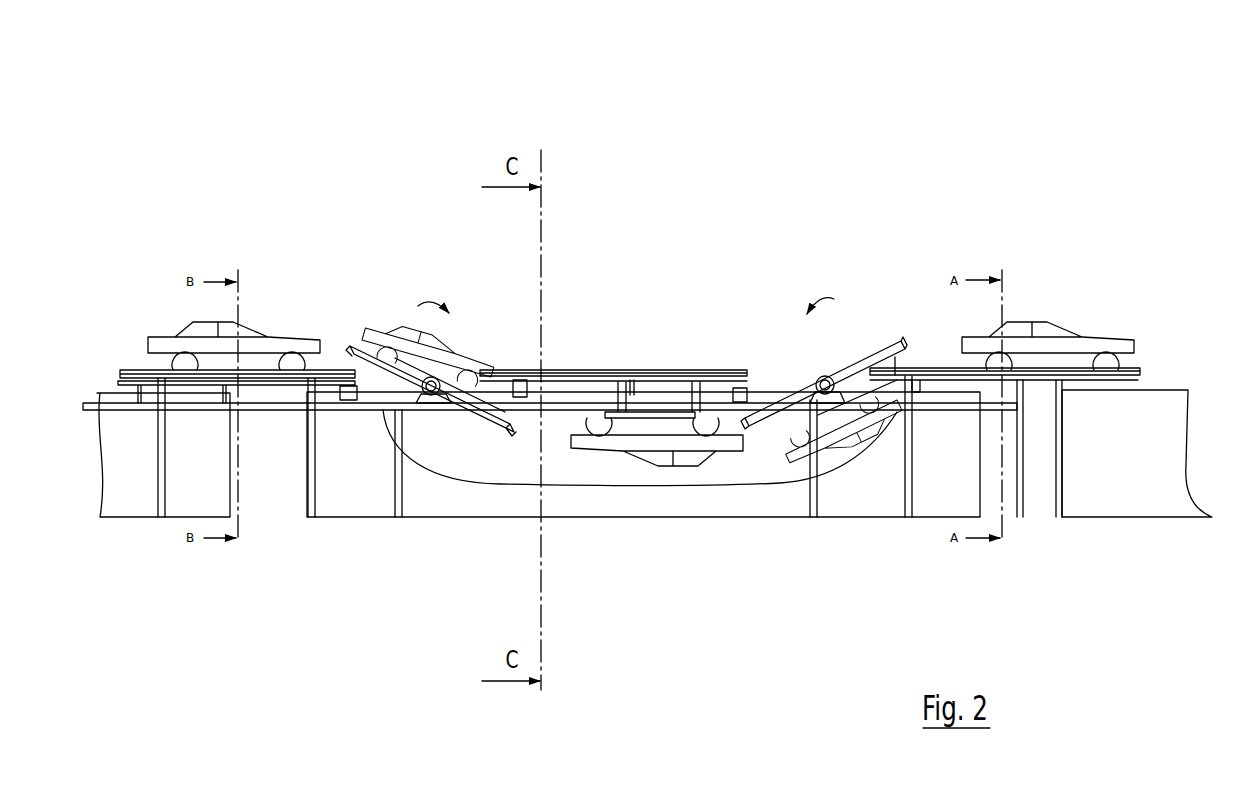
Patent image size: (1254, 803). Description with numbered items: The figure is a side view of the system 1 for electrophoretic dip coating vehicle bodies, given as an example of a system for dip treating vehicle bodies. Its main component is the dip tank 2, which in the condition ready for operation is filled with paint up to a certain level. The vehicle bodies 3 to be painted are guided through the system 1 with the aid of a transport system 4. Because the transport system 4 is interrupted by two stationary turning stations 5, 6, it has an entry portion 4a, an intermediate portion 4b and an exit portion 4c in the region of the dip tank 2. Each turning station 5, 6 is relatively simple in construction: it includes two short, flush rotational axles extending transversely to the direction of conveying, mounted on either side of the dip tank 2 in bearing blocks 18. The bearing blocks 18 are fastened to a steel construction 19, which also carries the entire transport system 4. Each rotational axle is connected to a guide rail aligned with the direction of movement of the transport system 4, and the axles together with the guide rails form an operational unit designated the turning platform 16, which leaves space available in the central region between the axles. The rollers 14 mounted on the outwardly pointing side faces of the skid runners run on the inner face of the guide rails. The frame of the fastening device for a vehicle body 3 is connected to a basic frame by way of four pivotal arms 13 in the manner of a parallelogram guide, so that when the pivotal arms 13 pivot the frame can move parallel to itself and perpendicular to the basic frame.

The system 1 is at (127, 172).
The dip tank 2 is at (626, 496).
The vehicle bodies 3 is at (268, 343).
The transport system 4 is at (133, 366).
The entry portion 4a is at (328, 366).
The intermediate portion 4b is at (588, 368).
The exit portion 4c is at (1145, 372).
The turning station 5 is at (432, 264).
The turning station 6 is at (858, 283).
The pivotal arms 13 is at (727, 371).
The rollers 14 is at (651, 404).
The turning platform 16 is at (862, 355).
The bearing blocks 18 is at (430, 397).
The steel construction 19 is at (160, 473).